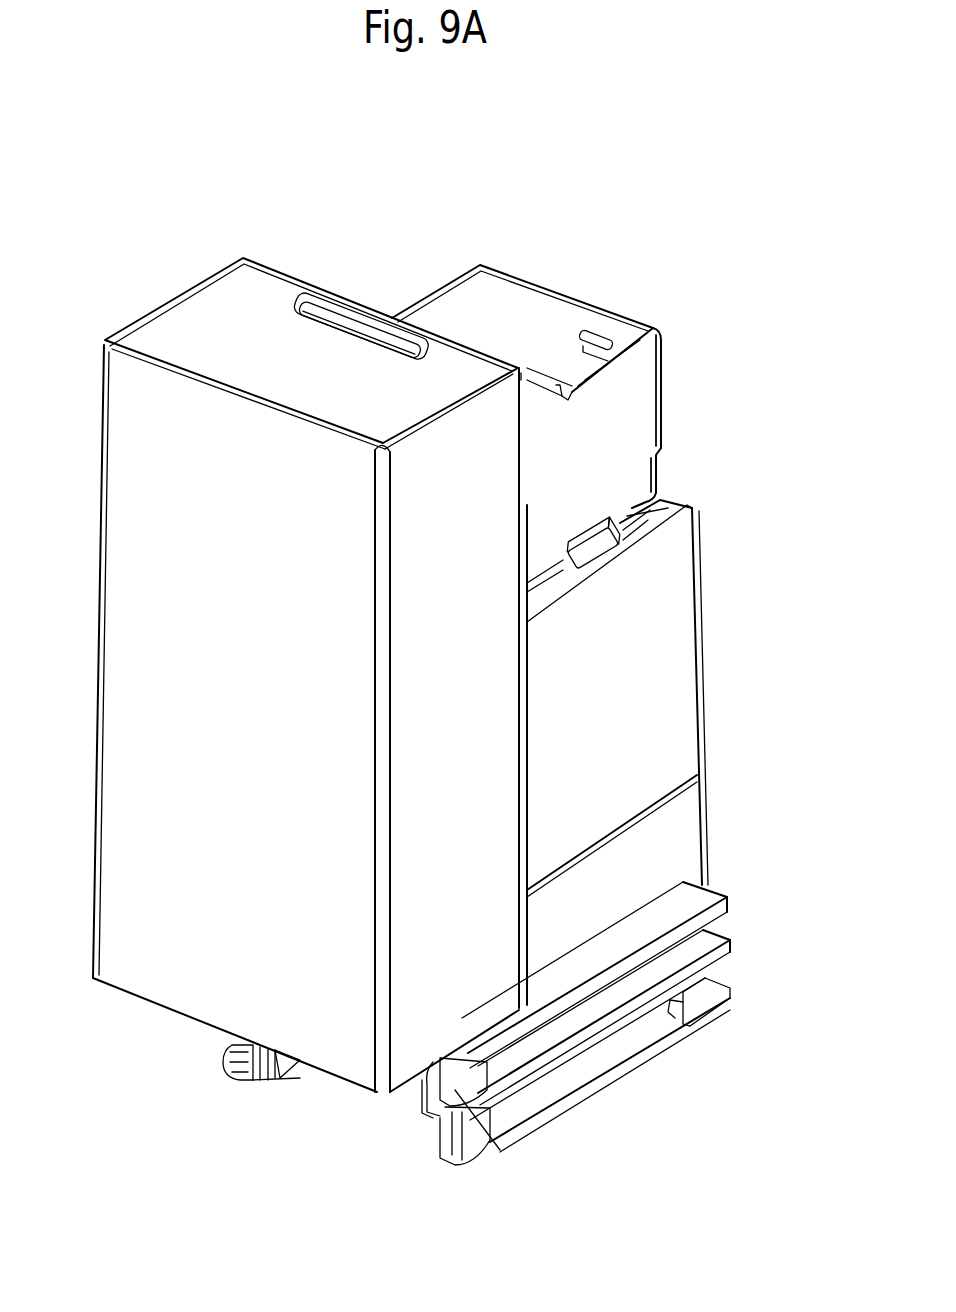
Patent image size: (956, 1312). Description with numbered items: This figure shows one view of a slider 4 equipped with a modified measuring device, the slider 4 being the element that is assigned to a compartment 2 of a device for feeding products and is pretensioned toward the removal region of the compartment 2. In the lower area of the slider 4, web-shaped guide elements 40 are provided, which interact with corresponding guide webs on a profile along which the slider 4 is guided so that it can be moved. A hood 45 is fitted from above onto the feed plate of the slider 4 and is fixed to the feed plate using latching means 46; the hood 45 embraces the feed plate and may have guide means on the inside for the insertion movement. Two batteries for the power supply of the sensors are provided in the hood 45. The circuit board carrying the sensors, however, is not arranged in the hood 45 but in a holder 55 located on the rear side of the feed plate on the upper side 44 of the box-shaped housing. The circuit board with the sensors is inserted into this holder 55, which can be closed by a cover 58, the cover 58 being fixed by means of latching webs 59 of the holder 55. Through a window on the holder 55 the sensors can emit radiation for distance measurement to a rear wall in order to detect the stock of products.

The compartment 2 is at (643, 607).
The slider 4 is at (635, 715).
The web-shaped guide elements 40 is at (226, 1073).
The upper side 44 is at (663, 515).
The hood 45 is at (187, 433).
The latching means 46 is at (367, 322).
The holder 55 is at (525, 328).
The cover 58 is at (625, 395).
The latching webs 59 is at (578, 360).